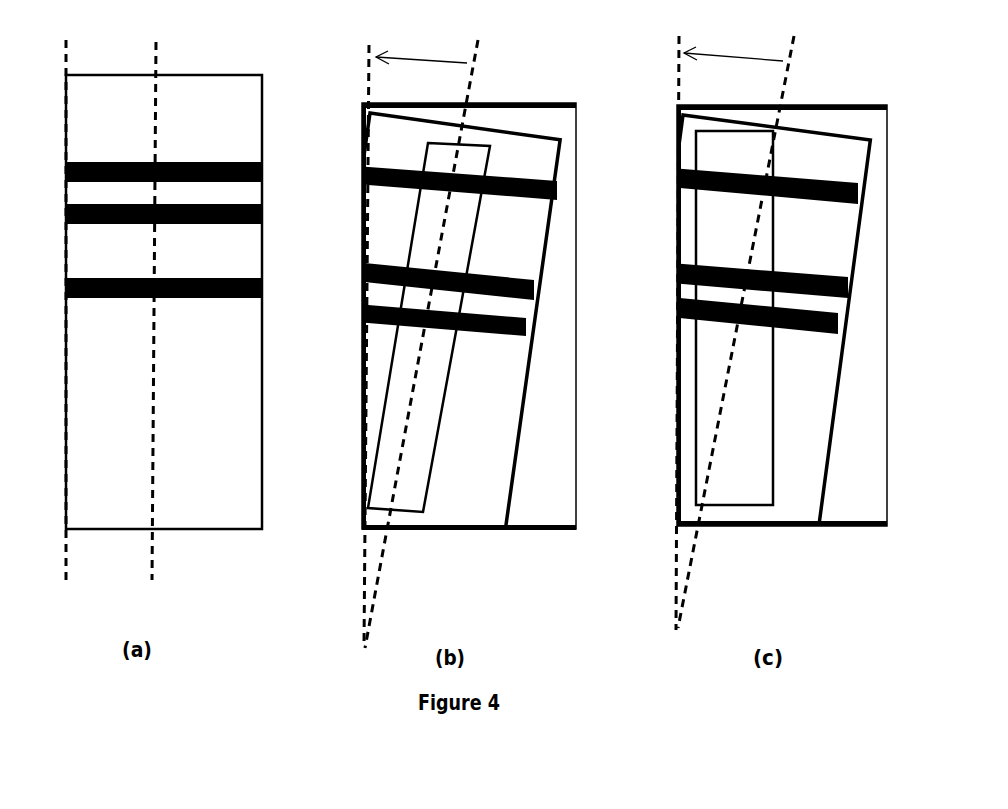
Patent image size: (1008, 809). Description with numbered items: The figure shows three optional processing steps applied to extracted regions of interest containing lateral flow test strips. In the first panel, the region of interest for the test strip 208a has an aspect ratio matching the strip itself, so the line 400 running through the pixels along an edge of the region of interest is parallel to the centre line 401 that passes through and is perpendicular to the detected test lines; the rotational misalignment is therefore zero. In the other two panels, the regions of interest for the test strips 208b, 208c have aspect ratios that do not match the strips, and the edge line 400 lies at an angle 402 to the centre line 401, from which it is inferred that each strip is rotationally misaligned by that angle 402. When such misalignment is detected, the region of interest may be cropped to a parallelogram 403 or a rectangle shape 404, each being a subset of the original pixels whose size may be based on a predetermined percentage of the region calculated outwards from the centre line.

The line through the pixels along an edge of the region of interest 400 is at (365, 328).
The centre line 401 is at (481, 328).
The angle 402 is at (579, 49).
The parallelogram 403 is at (432, 490).
The rectangle shape 404 is at (752, 508).
The test strip 208a is at (212, 493).
The test strip 208b is at (482, 490).
The test strip 208c is at (793, 443).